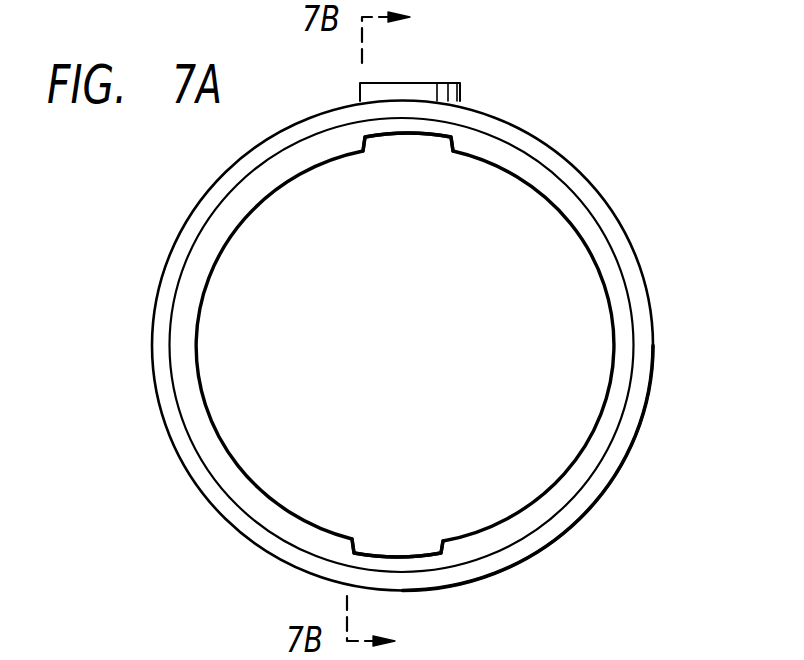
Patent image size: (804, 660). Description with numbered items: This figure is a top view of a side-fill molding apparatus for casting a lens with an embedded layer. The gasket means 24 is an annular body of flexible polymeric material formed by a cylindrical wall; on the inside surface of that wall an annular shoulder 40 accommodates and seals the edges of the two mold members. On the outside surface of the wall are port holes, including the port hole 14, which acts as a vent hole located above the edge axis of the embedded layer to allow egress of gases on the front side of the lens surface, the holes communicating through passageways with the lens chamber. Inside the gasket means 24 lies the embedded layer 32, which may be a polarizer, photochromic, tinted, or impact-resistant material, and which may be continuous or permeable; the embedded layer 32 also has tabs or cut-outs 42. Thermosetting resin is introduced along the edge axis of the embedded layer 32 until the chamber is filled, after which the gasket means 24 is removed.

The port hole 14 is at (425, 90).
The gasket means 24 is at (650, 303).
The embedded layer 32 is at (552, 272).
The annular shoulder 40 is at (618, 388).
The tabs or cut-outs 42 is at (405, 137).